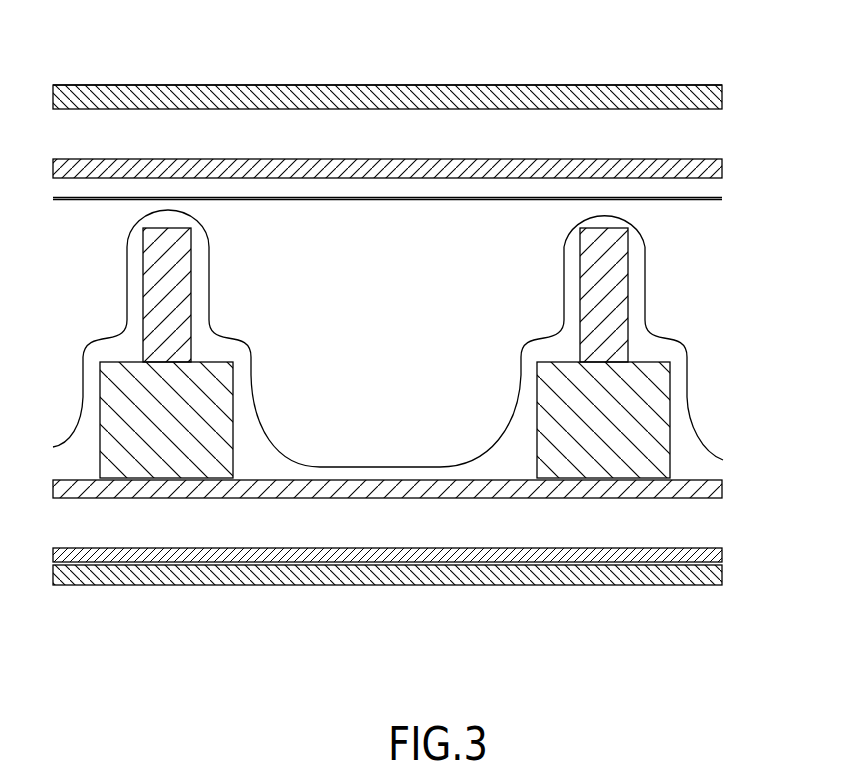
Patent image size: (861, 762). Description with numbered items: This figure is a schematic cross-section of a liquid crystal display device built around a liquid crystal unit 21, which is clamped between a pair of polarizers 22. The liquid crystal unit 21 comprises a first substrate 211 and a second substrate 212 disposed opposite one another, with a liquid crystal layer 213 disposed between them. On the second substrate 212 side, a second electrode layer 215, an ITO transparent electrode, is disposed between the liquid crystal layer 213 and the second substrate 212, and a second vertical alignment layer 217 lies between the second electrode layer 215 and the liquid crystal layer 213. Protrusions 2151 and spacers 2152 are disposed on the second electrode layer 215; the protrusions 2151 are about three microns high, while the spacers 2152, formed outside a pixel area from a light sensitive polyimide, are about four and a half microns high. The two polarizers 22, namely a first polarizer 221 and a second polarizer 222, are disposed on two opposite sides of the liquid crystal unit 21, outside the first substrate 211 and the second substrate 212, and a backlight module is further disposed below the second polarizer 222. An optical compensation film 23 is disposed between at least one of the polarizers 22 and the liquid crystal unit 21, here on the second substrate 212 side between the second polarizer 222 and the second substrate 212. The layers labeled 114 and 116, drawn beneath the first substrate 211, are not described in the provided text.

The liquid crystal unit 21 is at (68, 270).
The polarizers 22 is at (621, 78).
The optical compensation film 23 is at (718, 558).
The color filter layer 114 is at (718, 169).
The common electrode layer 116 is at (712, 190).
The first substrate 211 is at (708, 136).
The second substrate 212 is at (713, 525).
The liquid crystal layer 213 is at (445, 268).
The second electrode layer 215 is at (715, 493).
The second vertical alignment layer 217 is at (477, 470).
The first polarizer 221 is at (715, 100).
The second polarizer 222 is at (718, 578).
The protrusions 2151 is at (613, 290).
The spacers 2152 is at (635, 413).